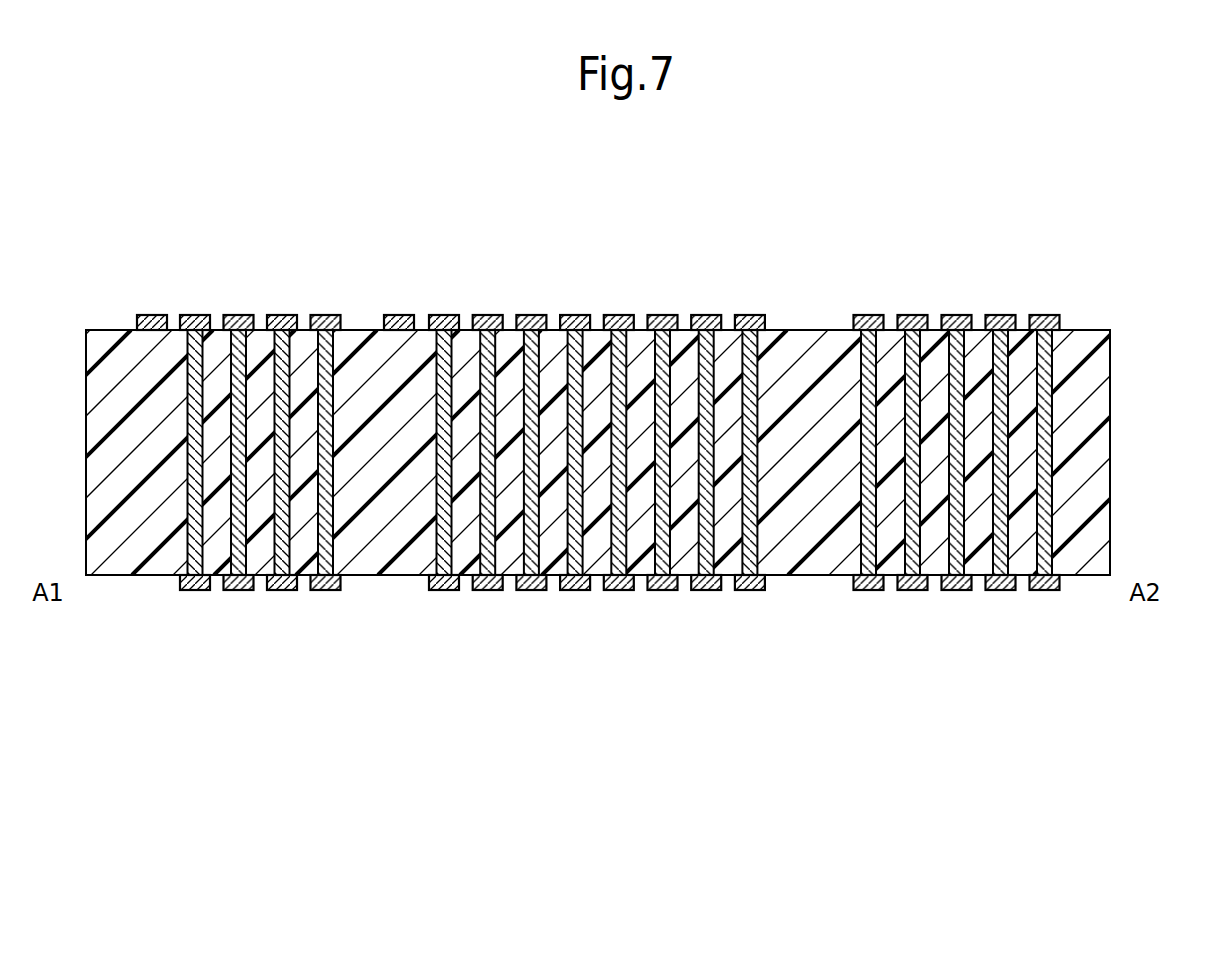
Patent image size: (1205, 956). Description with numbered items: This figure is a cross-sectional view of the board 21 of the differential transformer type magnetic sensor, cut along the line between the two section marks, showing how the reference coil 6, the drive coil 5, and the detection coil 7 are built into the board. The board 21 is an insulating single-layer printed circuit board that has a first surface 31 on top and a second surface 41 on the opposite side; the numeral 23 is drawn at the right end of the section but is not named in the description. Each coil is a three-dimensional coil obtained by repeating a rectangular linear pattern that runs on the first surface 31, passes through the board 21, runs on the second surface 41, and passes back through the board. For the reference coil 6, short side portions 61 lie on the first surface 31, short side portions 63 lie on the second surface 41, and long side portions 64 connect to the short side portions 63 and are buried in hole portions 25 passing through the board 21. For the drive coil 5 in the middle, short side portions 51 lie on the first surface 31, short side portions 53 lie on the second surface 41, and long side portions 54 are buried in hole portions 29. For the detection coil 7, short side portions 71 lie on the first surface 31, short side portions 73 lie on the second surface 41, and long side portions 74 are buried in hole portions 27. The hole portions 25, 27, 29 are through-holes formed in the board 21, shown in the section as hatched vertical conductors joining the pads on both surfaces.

The drive coil 5 is at (564, 434).
The reference coil 6 is at (228, 435).
The detection coil 7 is at (1014, 413).
The board 21 is at (1091, 322).
The side surface 23 is at (1112, 370).
The hole portions 25 is at (189, 472).
The hole portions 27 is at (1009, 417).
The hole portions 29 is at (438, 472).
The first surface 31 is at (108, 318).
The second surface 41 is at (105, 577).
The short side portions 51 is at (397, 314).
The short side portions 53 is at (445, 590).
The long side portions 54 is at (407, 510).
The short side portions 61 is at (148, 314).
The short side portions 63 is at (197, 590).
The long side portions 64 is at (159, 510).
The short side portions 71 is at (1037, 314).
The short side portions 73 is at (1002, 590).
The long side portions 74 is at (1083, 452).